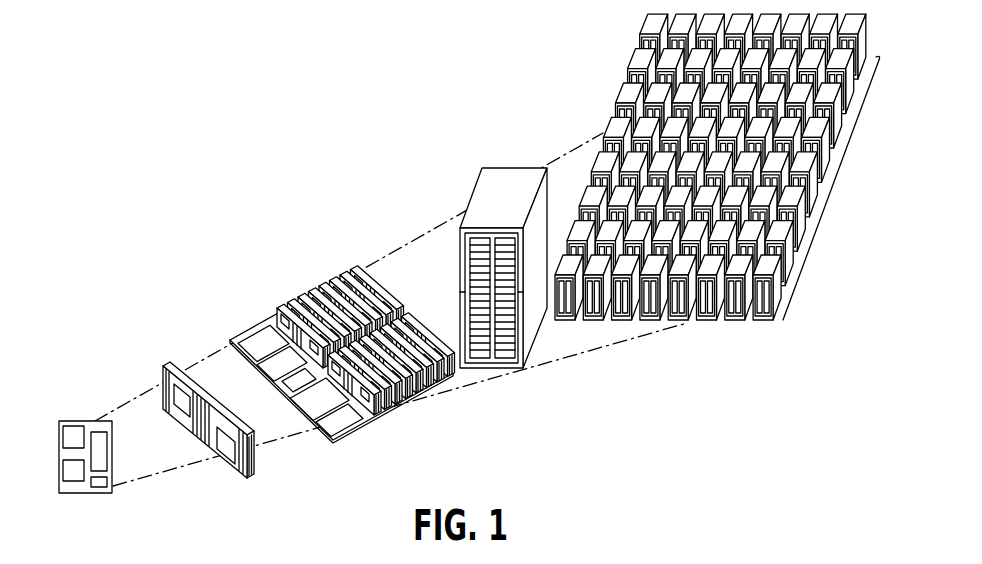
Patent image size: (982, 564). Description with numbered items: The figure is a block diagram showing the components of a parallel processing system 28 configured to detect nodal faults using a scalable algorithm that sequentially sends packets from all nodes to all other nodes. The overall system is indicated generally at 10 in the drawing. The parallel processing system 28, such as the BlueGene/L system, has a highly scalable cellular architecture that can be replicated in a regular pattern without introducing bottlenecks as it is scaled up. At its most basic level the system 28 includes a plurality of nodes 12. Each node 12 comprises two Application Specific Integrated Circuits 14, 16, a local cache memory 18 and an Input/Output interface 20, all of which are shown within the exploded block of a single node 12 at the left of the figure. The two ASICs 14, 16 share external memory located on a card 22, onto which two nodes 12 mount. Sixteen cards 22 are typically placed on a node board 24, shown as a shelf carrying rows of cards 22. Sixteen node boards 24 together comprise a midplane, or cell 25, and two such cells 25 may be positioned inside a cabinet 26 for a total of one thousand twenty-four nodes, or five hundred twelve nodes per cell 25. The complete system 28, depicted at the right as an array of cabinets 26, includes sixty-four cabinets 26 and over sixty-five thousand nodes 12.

The computing system 10 is at (245, 167).
The node 12 is at (130, 435).
The Application Specific Integrated Circuit 14 is at (63, 437).
The Application Specific Integrated Circuit 16 is at (63, 470).
The local cache memory 18 is at (100, 450).
The Input/Output interface 20 is at (100, 487).
The card 22 is at (183, 366).
The node board 24 is at (336, 441).
The cell 25 is at (542, 208).
The cabinet 26 is at (497, 172).
The parallel processing system 28 is at (795, 292).